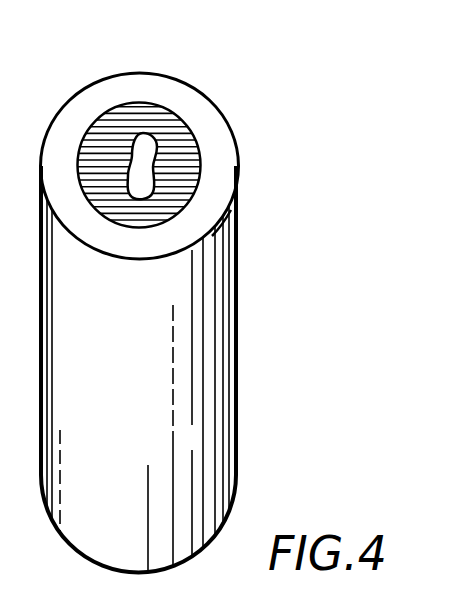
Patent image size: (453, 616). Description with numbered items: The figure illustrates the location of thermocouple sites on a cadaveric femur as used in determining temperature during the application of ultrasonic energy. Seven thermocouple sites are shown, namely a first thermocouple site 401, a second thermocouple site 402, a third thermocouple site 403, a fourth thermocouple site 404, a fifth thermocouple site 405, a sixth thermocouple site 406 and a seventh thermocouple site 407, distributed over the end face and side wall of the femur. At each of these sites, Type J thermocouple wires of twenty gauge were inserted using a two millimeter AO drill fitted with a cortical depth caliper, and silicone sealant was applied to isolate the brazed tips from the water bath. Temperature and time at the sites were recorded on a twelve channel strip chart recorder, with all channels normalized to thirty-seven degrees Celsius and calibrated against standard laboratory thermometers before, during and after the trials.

The thermocouple site 401 is at (240, 301).
The thermocouple site 402 is at (163, 125).
The thermocouple site 403 is at (283, 165).
The thermocouple site 404 is at (283, 165).
The thermocouple site 405 is at (203, 160).
The thermocouple site 406 is at (213, 193).
The thermocouple site 407 is at (233, 211).